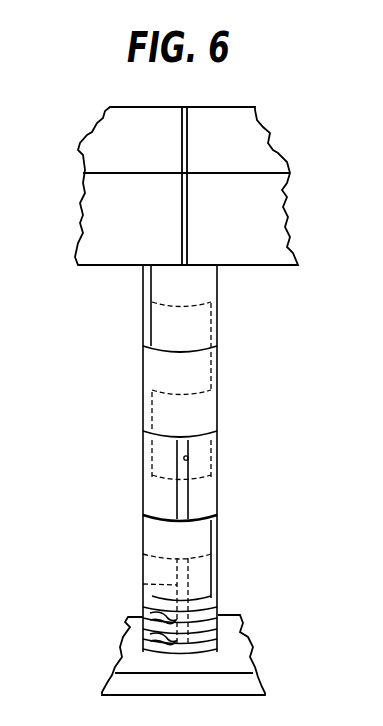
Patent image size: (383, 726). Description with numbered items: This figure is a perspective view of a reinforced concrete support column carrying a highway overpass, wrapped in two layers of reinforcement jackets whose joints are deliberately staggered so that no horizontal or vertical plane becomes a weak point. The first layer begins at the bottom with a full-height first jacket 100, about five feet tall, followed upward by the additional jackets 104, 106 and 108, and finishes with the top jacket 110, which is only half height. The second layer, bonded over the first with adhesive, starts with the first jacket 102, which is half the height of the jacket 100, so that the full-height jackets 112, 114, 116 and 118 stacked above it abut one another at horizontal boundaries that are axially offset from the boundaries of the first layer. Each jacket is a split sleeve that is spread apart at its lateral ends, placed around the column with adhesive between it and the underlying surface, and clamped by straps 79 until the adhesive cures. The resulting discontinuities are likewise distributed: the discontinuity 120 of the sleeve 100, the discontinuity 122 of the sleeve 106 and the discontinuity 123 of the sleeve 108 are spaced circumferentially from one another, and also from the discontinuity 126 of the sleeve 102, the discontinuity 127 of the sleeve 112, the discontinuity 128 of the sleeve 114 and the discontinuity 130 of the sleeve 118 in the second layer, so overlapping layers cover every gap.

The straps 79 is at (148, 632).
The first jacket of the first layer 100 is at (143, 580).
The first jacket of the second layer 102 is at (210, 622).
The jacket 104 is at (160, 500).
The jacket 106 is at (205, 418).
The jacket 108 is at (145, 368).
The top jacket of the first layer 110 is at (208, 290).
The jacket 112 is at (153, 535).
The jacket 114 is at (210, 495).
The jacket 116 is at (202, 402).
The jacket 118 is at (264, 326).
The discontinuity 120 is at (140, 583).
The discontinuity 122 is at (143, 425).
The discontinuity 123 is at (212, 355).
The discontinuity 126 is at (145, 645).
The discontinuity 127 is at (217, 525).
The discontinuity 128 is at (186, 460).
The discontinuity 130 is at (143, 327).